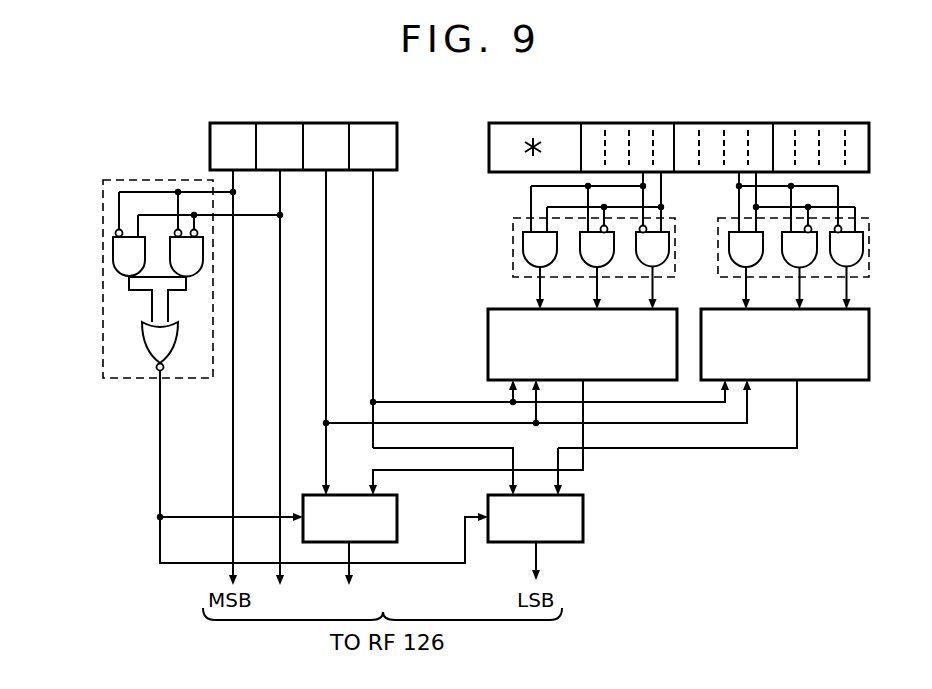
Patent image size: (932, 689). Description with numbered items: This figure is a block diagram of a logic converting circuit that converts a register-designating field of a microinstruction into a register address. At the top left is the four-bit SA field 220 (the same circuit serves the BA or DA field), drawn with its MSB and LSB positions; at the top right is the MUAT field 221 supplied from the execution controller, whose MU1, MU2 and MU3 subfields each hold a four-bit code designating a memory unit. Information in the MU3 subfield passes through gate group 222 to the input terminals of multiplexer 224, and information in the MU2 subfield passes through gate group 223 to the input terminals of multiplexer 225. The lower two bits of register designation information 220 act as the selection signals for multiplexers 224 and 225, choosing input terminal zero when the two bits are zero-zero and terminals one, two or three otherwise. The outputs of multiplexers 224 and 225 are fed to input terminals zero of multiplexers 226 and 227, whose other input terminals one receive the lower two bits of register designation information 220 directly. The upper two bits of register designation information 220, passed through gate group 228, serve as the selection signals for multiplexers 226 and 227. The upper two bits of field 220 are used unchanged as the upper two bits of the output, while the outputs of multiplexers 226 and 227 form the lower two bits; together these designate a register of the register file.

The SA field (register designation information) 220 is at (397, 141).
The MUAT field 221 is at (869, 145).
The gate group 222 is at (513, 238).
The gate group 223 is at (869, 240).
The multiplexer 224 is at (488, 352).
The multiplexer 225 is at (869, 353).
The multiplexer 226 is at (397, 523).
The multiplexer 227 is at (583, 523).
The gate group 228 is at (103, 200).